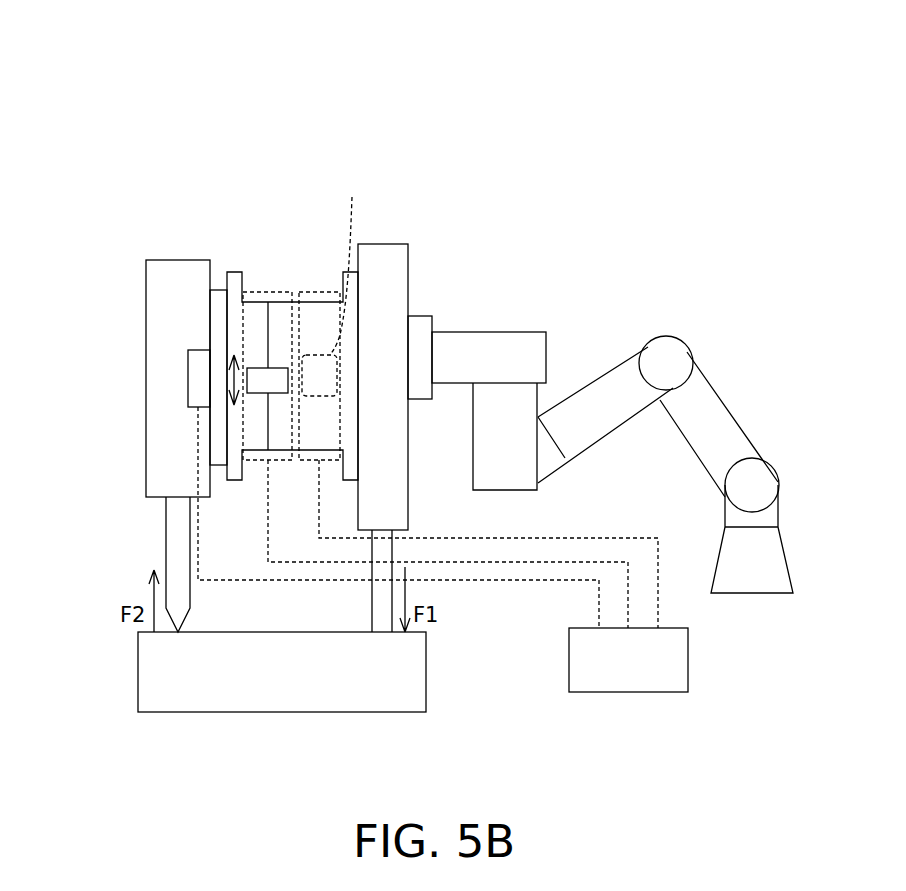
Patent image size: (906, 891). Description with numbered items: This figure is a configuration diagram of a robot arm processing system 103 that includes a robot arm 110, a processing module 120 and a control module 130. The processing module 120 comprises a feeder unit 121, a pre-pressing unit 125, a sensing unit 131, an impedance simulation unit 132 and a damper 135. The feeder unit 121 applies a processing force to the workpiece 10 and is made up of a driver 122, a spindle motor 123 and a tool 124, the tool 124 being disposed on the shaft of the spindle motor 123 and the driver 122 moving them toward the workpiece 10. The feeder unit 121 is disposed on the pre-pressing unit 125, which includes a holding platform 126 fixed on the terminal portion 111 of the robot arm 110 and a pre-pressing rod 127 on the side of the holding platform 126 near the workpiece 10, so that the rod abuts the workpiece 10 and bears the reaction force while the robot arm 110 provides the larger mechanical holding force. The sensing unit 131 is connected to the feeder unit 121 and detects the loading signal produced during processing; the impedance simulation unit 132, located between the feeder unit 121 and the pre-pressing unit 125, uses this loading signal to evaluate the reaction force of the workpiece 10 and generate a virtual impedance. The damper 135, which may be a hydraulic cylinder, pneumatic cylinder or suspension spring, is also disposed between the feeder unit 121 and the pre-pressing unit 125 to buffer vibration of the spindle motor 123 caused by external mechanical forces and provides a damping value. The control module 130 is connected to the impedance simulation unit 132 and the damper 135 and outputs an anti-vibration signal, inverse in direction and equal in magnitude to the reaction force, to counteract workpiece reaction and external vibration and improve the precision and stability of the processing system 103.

The robot arm processing system 103 is at (82, 38).
The workpiece 10 is at (426, 671).
The robot arm 110 is at (762, 357).
The terminal portion 111 is at (450, 343).
The processing module 120 is at (100, 223).
The feeder unit 121 is at (63, 265).
The driver 122 is at (218, 298).
The spindle motor 123 is at (153, 273).
The tool 124 is at (183, 546).
The pre-pressing unit 125 is at (63, 365).
The holding platform 126 is at (387, 268).
The pre-pressing rod 127 is at (395, 549).
The control module 130 is at (628, 692).
The sensing unit 131 is at (188, 370).
The impedance simulation unit 132 is at (322, 292).
The damper 135 is at (270, 292).